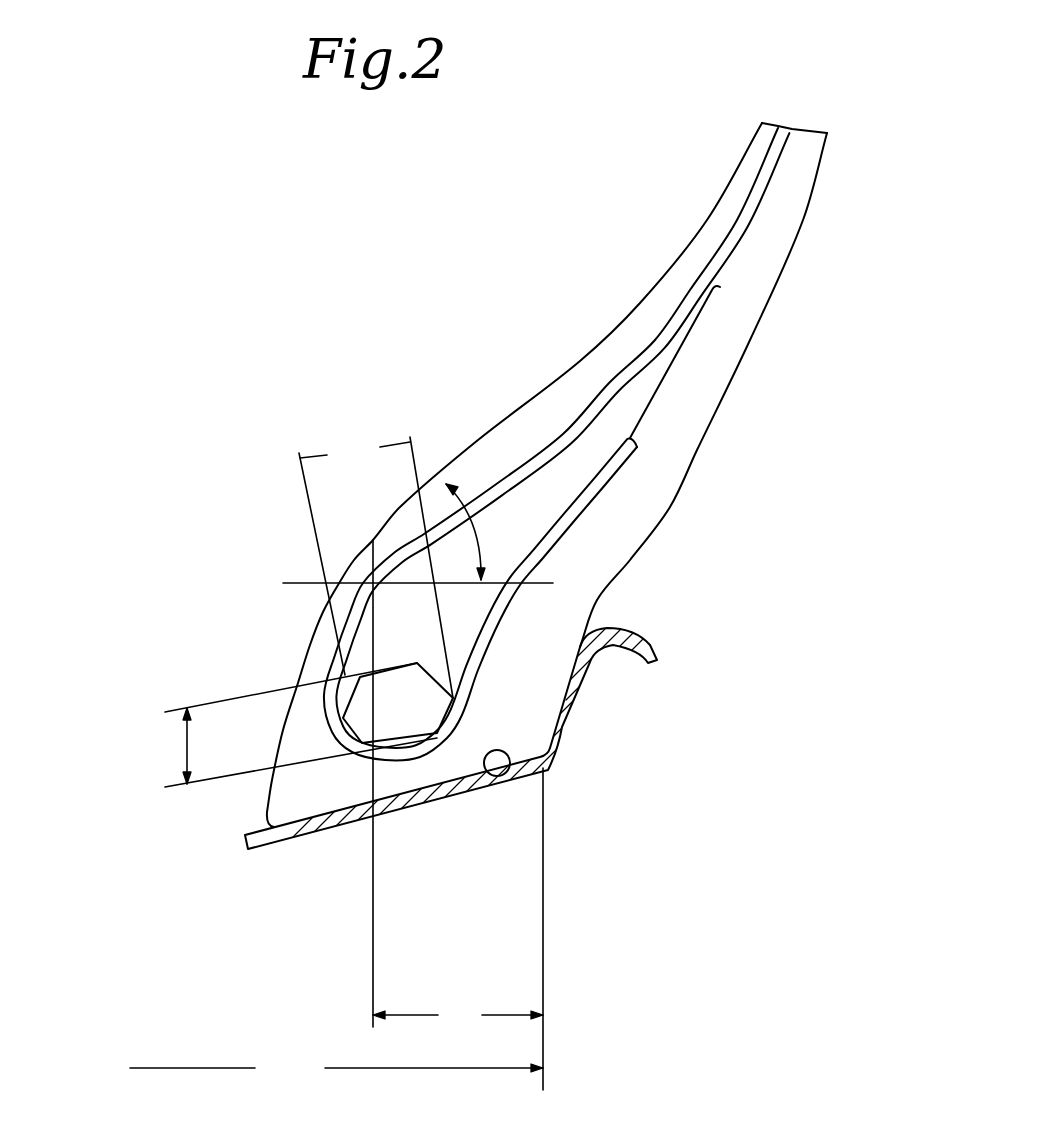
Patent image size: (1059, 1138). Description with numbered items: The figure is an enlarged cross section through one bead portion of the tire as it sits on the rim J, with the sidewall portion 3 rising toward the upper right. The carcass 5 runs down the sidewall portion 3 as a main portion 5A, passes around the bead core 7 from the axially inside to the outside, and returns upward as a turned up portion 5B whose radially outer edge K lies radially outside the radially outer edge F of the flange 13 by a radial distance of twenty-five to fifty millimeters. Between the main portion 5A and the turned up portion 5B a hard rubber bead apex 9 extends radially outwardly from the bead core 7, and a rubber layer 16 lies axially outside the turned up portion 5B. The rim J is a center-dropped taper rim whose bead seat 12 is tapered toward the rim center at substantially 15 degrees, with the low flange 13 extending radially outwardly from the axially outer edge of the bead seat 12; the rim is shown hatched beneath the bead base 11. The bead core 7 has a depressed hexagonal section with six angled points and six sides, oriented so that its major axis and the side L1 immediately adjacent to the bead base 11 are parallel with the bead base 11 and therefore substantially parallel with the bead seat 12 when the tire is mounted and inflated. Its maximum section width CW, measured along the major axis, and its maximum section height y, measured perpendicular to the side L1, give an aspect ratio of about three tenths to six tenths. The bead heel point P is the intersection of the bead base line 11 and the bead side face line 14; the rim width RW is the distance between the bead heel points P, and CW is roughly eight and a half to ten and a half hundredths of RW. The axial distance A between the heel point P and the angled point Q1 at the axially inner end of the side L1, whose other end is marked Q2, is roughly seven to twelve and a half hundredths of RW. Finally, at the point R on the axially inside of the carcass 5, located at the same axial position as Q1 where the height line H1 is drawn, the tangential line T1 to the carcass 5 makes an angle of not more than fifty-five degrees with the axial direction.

The sidewall portion 3 is at (582, 709).
The carcass 5 is at (556, 428).
The main portion 5A is at (768, 172).
The turned up portion 5B is at (629, 438).
The bead core 7 is at (410, 727).
The bead apex 9 is at (664, 360).
The bead base 11 is at (301, 837).
The bead seat 12 is at (484, 775).
The low flange 13 is at (582, 675).
The bead side face line 14 is at (567, 723).
The bead toe / inner liner 15 is at (265, 796).
The rubber layer 16 is at (533, 645).
The radially outer edge of the flange F is at (620, 630).
The radially outer edge of the turned up portion K is at (631, 439).
The bead heel point P is at (547, 770).
The point on axially inside of carcass R is at (373, 582).
The rim J is at (267, 850).
The tangential line T1 is at (513, 388).
The height H1 is at (300, 588).
The maximum section width CW is at (376, 565).
The axial distance A is at (458, 815).
The rim width RW is at (336, 1069).
The maximum section height y is at (300, 725).
The angled point Q1 is at (375, 752).
The point Q2 is at (435, 735).
The side of bead core L1 is at (397, 750).